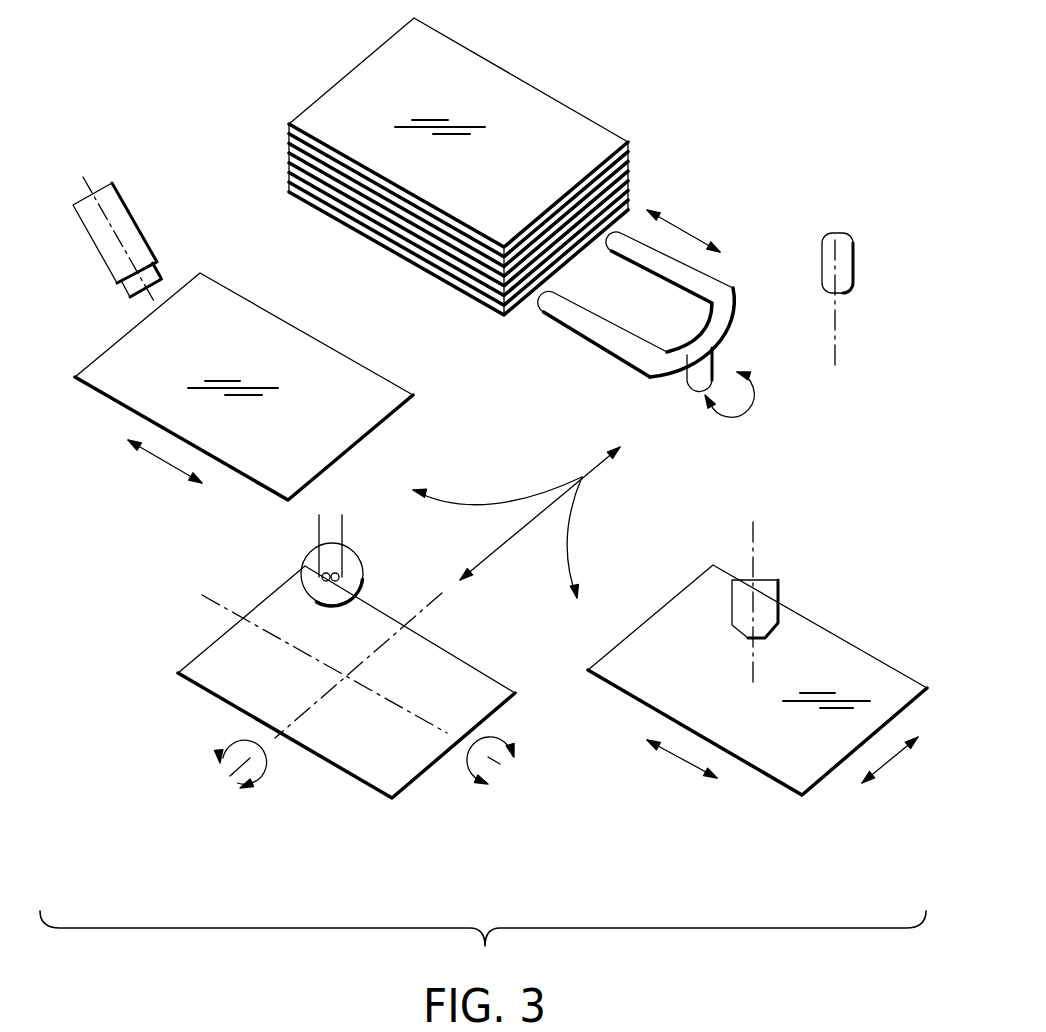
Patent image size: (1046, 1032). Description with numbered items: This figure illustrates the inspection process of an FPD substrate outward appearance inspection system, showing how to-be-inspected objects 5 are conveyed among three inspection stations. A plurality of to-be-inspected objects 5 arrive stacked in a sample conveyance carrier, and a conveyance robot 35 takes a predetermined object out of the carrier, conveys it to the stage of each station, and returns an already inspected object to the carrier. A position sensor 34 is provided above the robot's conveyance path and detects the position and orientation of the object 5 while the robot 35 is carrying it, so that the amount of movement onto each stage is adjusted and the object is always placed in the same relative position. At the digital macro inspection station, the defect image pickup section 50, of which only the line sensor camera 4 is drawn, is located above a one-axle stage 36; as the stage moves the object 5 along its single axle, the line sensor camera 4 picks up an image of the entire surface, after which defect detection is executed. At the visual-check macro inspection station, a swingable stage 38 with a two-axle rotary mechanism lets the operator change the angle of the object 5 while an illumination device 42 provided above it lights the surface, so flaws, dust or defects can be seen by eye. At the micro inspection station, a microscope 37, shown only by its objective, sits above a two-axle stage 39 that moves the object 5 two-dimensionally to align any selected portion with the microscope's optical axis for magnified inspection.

The to-be-inspected object 5 is at (507, 72).
The defect image pickup section 50 is at (142, 152).
The line sensor camera 4 is at (125, 200).
The one-axle stage 36 is at (377, 377).
The robot 35 is at (723, 278).
The position sensor 34 is at (853, 247).
The illumination device 42 is at (303, 560).
The swingable stage 38 is at (485, 672).
The microscope 37 is at (772, 578).
The two-axle stage 39 is at (893, 667).